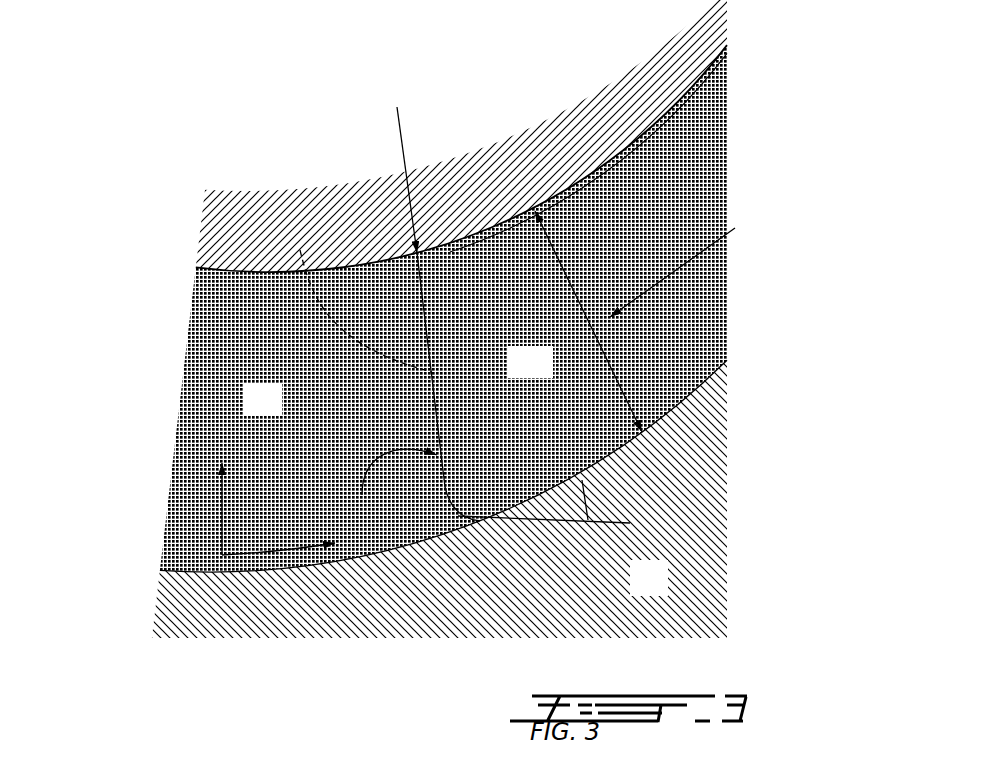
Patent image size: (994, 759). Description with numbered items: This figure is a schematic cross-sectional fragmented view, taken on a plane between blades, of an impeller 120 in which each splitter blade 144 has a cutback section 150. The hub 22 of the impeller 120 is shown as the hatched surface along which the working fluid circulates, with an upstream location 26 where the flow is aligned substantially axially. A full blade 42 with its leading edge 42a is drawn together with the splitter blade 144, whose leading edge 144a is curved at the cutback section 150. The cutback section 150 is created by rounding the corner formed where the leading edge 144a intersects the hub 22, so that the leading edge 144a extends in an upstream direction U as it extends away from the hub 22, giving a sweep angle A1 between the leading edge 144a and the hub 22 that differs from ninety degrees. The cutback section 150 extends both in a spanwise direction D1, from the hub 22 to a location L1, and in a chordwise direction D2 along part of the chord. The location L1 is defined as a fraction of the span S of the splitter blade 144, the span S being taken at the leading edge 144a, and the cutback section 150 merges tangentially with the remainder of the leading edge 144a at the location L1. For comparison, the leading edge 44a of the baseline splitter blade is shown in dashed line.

The impeller 120 is at (765, 152).
The full blade 42 is at (280, 412).
The leading edge of full blade 42a is at (183, 375).
The upstream location 26 is at (140, 413).
The leading edge of baseline splitter blade 44a is at (300, 250).
The leading edge of splitter blade 144a is at (422, 300).
The splitter blade 144 is at (552, 375).
The span S is at (572, 287).
The upstream direction U is at (682, 268).
The sweep angle A1 is at (590, 502).
The hub 22 is at (666, 592).
The spanwise direction D1 is at (222, 509).
The chordwise direction D2 is at (276, 553).
The location L1 is at (362, 495).
The cutback section 150 is at (465, 518).